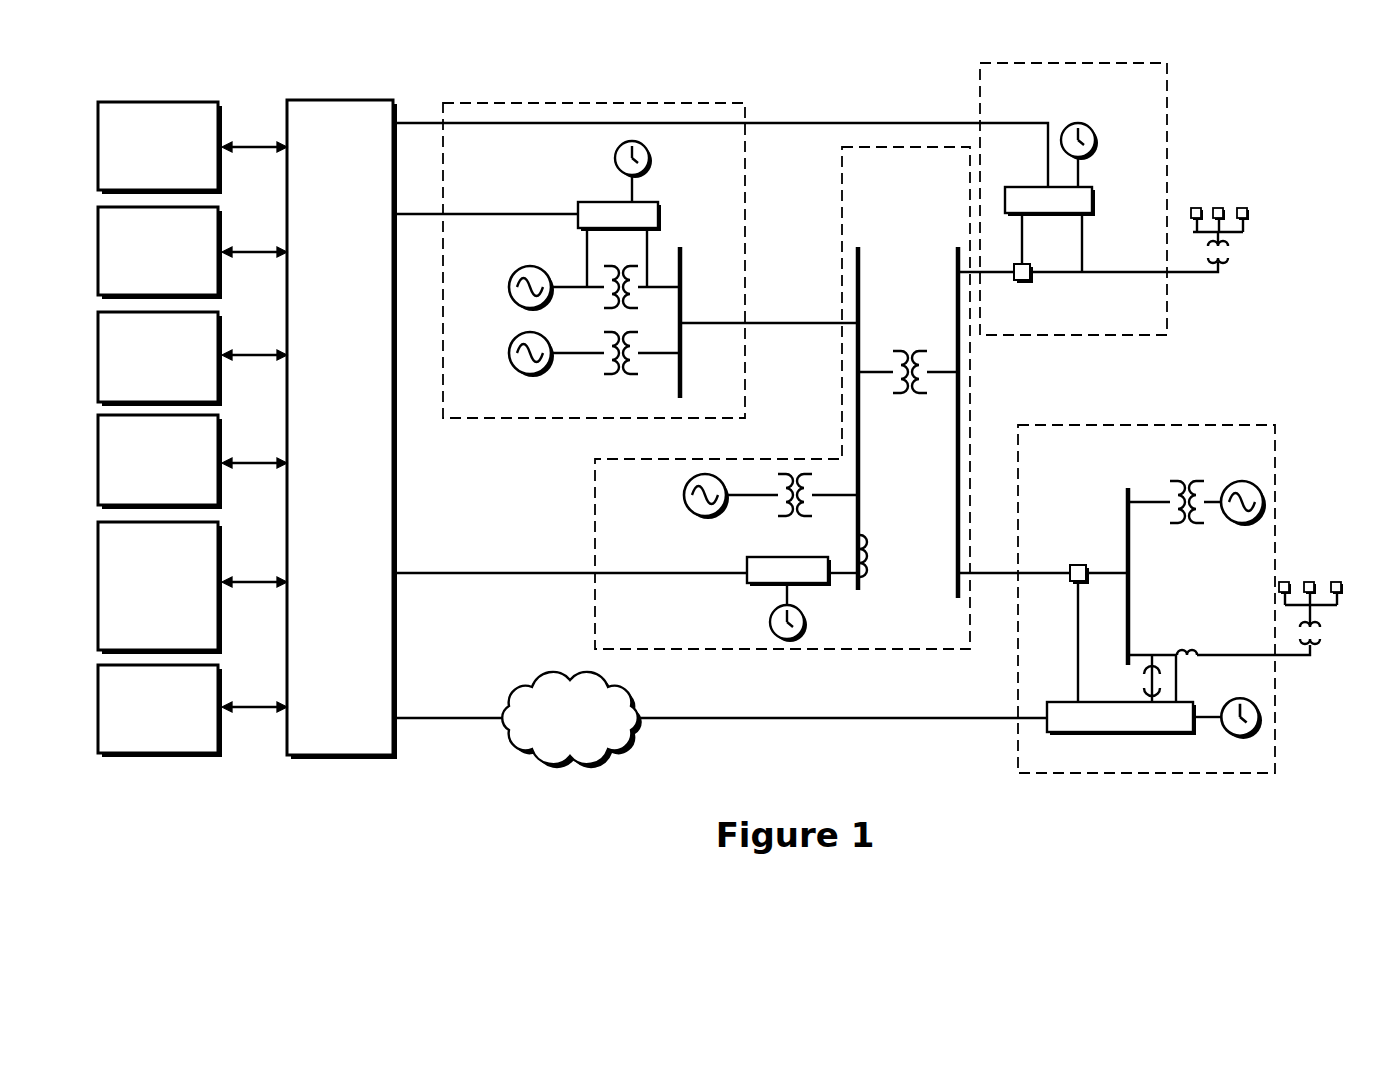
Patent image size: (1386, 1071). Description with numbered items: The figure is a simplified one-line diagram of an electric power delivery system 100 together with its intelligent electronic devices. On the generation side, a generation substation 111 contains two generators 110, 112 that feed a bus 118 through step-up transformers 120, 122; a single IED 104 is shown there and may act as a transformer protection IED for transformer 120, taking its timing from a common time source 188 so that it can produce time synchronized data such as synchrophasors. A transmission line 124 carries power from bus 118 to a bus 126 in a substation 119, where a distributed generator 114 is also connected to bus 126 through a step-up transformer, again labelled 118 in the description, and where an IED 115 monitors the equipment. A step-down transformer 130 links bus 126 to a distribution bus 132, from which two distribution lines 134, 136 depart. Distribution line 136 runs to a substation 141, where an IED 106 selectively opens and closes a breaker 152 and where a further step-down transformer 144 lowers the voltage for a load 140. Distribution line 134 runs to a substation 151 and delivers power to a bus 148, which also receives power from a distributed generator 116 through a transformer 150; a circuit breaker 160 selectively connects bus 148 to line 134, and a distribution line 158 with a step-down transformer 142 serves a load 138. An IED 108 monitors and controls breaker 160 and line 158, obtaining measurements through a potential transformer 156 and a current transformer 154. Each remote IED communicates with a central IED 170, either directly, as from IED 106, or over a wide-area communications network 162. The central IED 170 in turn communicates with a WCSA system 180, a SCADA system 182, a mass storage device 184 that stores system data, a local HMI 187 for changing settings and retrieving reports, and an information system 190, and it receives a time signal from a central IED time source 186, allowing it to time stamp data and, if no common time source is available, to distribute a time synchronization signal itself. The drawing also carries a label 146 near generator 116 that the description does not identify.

The electric power delivery system 100 is at (1270, 138).
The IED 104 is at (600, 202).
The IED 106 is at (1012, 187).
The IED 108 is at (1198, 732).
The generator 110 is at (509, 287).
The generation substation 111 is at (535, 418).
The generator 112 is at (509, 355).
The generator 114 is at (684, 495).
The IED 115 is at (811, 557).
The distributed generator 116 is at (1235, 524).
The bus 118 is at (684, 378).
The substation 119 is at (738, 649).
The step-up transformer 120 is at (601, 301).
The step-up transformer 122 is at (626, 376).
The transmission line 124 is at (780, 325).
The bus 126 is at (862, 425).
The step-down transformer 130 is at (905, 358).
The distribution bus 132 is at (958, 560).
The distribution line 134 is at (1035, 575).
The distribution line 136 is at (1000, 280).
The load 138 is at (1310, 586).
The load 140 is at (1252, 215).
The substation 141 is at (1150, 335).
The step-down transformer 142 is at (1318, 640).
The step-down transformer 144 is at (1230, 255).
The generator connection 146 is at (1280, 485).
The bus 148 is at (1124, 490).
The transformer 150 is at (1188, 482).
The substation 151 is at (1215, 773).
The breaker 152 is at (1032, 278).
The current transformer 154 is at (1183, 661).
The potential transformer 156 is at (1138, 675).
The distribution line 158 is at (1195, 653).
The circuit breaker 160 is at (1075, 565).
The wide-area communications network 162 is at (572, 720).
The central IED 170 is at (342, 429).
The WCSA system 180 is at (192, 148).
The SCADA system 182 is at (192, 253).
The mass storage device 184 is at (192, 359).
The central IED time source 186 is at (192, 588).
The local HMI 187 is at (192, 462).
The common time source 188 is at (650, 158).
The information system 190 is at (192, 711).